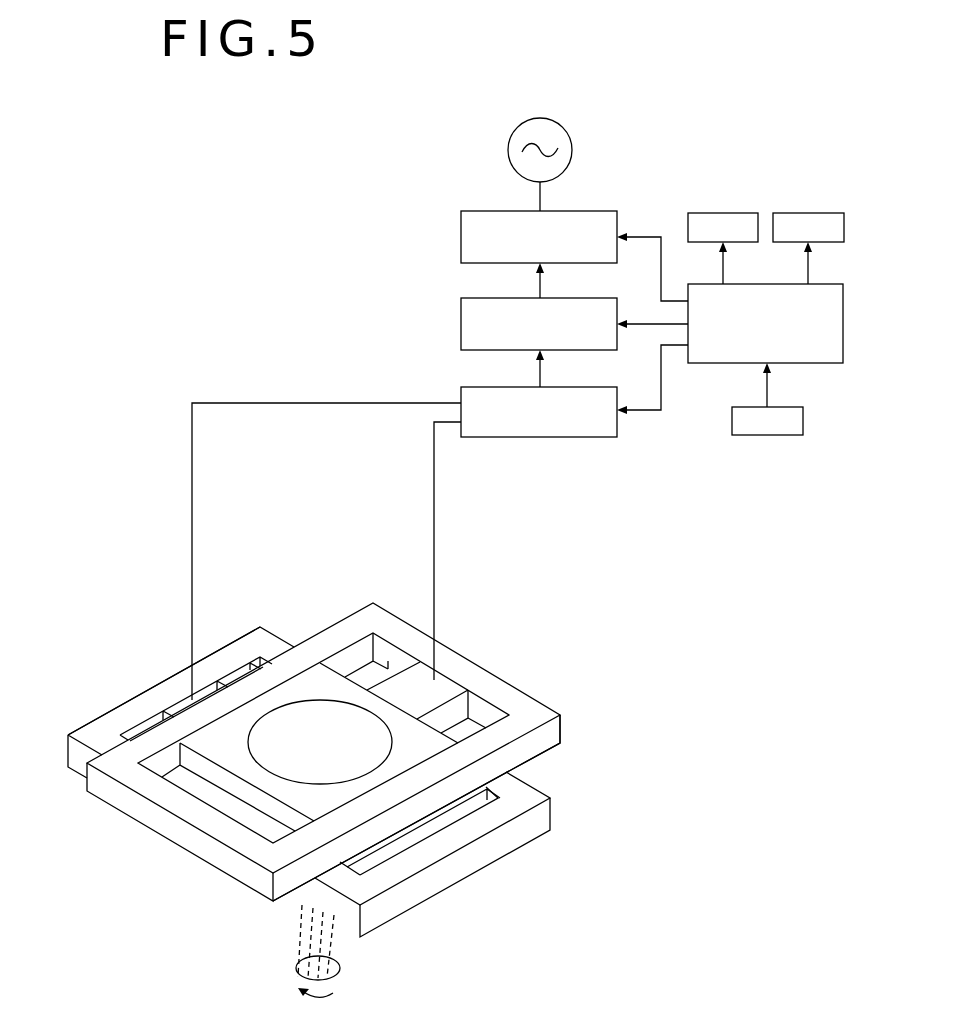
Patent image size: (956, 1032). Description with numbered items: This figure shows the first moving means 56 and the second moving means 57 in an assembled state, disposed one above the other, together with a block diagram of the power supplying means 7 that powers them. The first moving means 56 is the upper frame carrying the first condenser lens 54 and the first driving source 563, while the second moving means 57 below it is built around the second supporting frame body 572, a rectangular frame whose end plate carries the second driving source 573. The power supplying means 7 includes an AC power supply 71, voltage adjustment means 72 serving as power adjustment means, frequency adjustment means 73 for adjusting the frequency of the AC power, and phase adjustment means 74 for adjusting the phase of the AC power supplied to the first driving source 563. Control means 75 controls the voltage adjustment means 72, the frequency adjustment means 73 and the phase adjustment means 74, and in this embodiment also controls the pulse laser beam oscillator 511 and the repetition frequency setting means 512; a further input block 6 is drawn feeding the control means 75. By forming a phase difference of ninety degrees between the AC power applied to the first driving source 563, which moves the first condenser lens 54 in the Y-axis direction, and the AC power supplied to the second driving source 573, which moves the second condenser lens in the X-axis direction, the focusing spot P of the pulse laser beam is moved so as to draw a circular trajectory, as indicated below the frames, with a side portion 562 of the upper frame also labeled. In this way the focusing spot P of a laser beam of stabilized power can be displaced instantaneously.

The power supplying means 7 is at (659, 193).
The AC power supply 71 is at (509, 152).
The voltage adjustment means 72 is at (461, 243).
The frequency adjustment means 73 is at (461, 328).
The phase adjustment means 74 is at (461, 395).
The control means 75 is at (715, 364).
The pulse laser beam oscillator 511 is at (723, 227).
The repetition frequency setting means 512 is at (808, 227).
The input unit 6 is at (773, 431).
The first condenser lens 54 is at (318, 718).
The first moving means 56 is at (556, 698).
The side portion of first frame 562 is at (552, 733).
The first driving source 563 is at (443, 687).
The second moving means 57 is at (113, 698).
The second supporting frame body 572 is at (95, 728).
The second driving source 573 is at (178, 707).
The focusing spot P is at (297, 968).